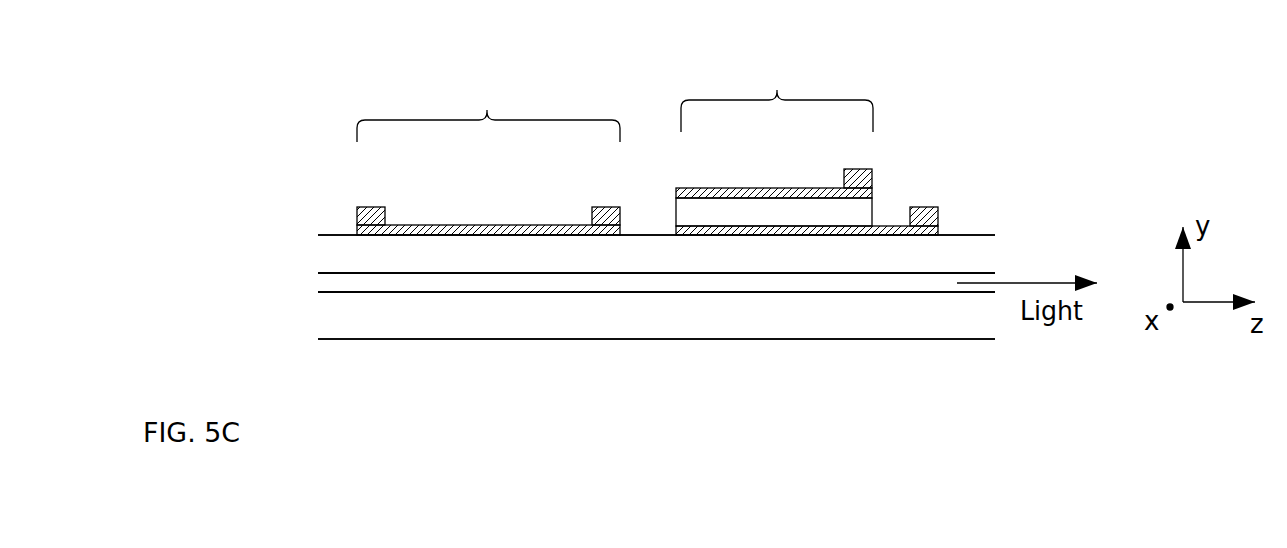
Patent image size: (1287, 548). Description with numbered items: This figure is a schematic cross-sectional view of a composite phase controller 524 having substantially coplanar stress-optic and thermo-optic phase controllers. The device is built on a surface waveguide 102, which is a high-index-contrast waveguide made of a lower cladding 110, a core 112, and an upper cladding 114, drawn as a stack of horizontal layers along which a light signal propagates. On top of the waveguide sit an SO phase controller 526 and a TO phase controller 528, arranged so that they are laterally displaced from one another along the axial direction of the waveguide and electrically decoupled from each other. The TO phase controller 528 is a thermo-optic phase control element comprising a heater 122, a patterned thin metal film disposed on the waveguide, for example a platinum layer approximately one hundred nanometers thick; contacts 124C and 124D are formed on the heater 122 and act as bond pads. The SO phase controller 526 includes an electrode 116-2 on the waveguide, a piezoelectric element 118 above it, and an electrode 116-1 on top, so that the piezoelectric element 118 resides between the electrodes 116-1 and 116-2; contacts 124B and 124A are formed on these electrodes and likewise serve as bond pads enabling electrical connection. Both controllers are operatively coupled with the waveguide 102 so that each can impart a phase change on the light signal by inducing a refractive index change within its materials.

The phase control device 524 is at (272, 77).
The TO phase controller 528 is at (448, 236).
The SO phase controller 526 is at (891, 247).
The heater 122 is at (575, 235).
The contact 124C is at (370, 207).
The contact 124D is at (605, 207).
The contact 124B is at (873, 178).
The contact 124A is at (938, 215).
The piezoelectric element 118 is at (853, 213).
The electrode 116-1 is at (853, 236).
The electrode 116-2 is at (752, 199).
The waveguide 102 is at (302, 235).
The upper cladding 114 is at (388, 266).
The core 112 is at (403, 282).
The lower cladding 110 is at (390, 331).